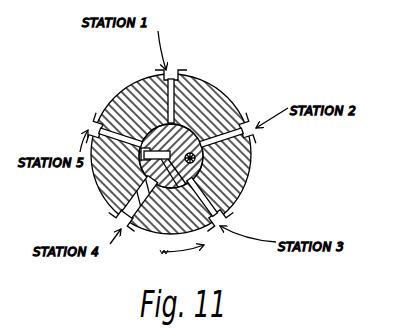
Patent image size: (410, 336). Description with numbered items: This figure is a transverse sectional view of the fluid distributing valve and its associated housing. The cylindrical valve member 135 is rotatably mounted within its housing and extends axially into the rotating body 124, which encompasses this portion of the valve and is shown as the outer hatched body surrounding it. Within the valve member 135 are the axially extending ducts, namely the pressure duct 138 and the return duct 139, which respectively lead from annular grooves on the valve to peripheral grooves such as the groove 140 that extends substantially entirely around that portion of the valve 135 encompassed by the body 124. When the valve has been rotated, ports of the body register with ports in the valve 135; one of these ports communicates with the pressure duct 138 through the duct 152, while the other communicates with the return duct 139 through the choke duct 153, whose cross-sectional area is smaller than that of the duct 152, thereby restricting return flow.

The rotating body 124 is at (122, 111).
The cylindrical valve member 135 is at (197, 91).
The groove 140 is at (227, 120).
The return duct 139 is at (204, 160).
The duct 152 is at (206, 178).
The pressure duct 138 is at (140, 166).
The choke duct 153 is at (117, 201).